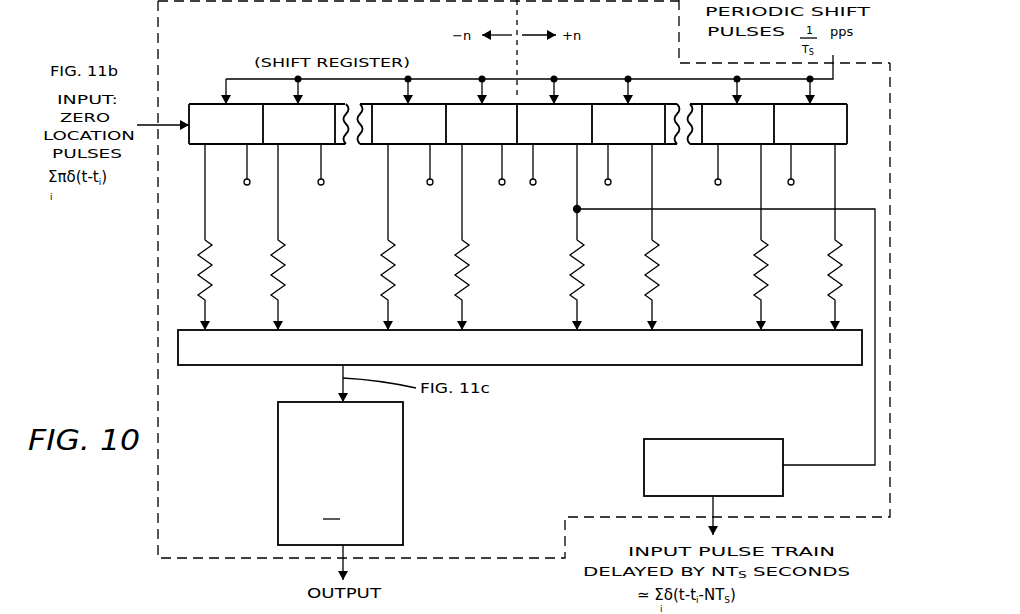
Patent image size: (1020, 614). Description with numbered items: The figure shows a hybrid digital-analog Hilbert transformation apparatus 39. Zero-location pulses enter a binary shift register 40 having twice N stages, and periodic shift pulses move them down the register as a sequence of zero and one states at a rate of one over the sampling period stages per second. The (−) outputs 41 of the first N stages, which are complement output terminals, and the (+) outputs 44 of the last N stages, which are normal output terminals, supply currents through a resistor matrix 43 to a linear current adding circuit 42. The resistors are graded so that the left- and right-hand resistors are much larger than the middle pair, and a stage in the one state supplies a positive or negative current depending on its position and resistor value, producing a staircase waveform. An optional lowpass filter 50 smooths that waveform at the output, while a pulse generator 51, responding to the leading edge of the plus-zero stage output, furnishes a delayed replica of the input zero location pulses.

The apparatus 39 is at (490, 560).
The 2N-stage binary shift register 40 is at (201, 95).
The (−) outputs 41 is at (205, 170).
The adding circuit 42 is at (259, 367).
The resistor matrix 43 is at (270, 271).
The (+) outputs 44 is at (652, 185).
The optional lowpass filter 50 is at (278, 496).
The pulse generator 51 is at (721, 438).